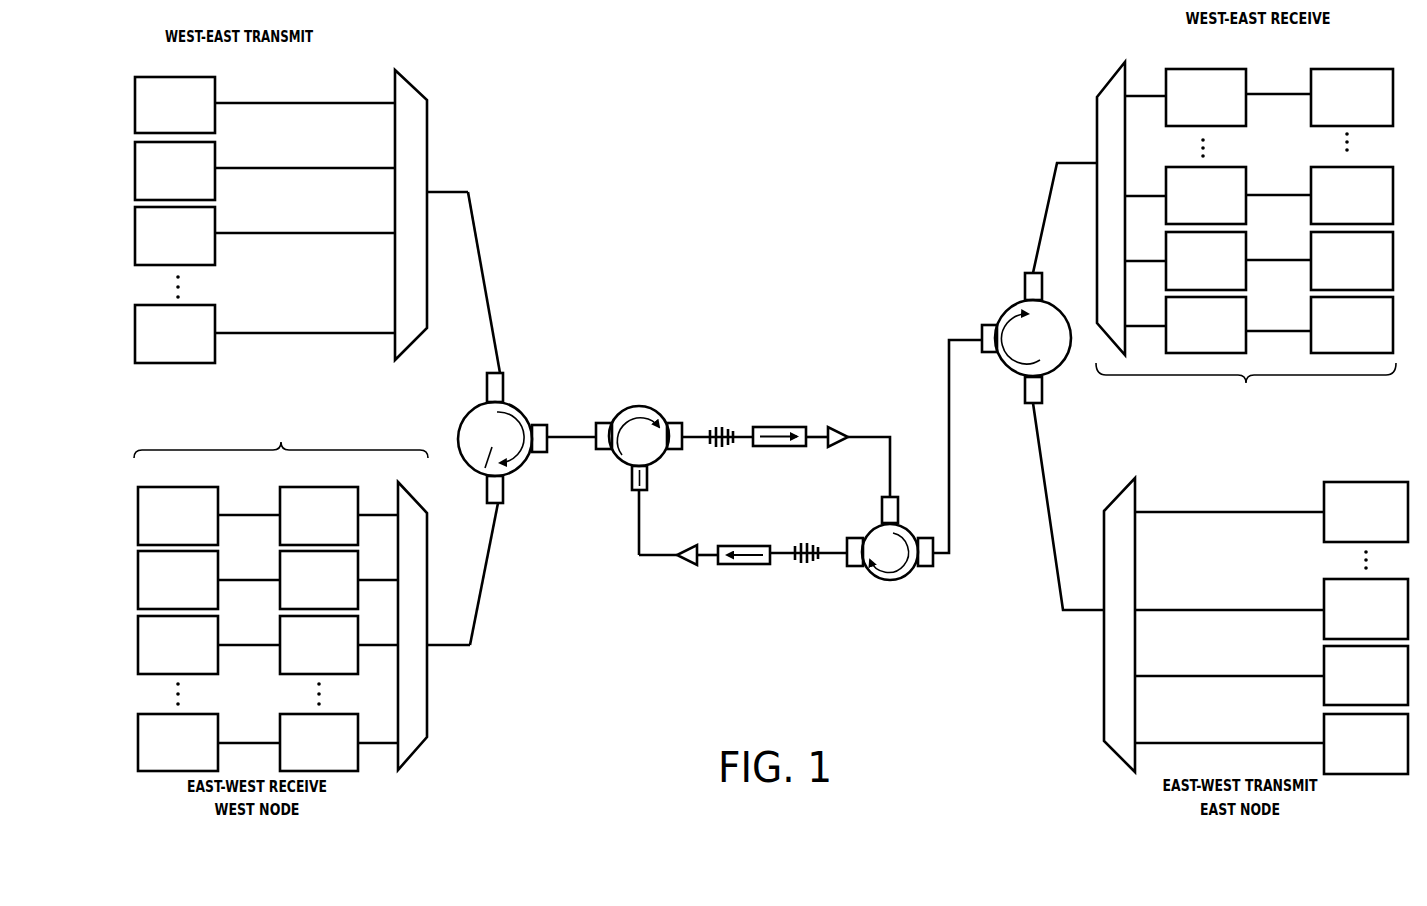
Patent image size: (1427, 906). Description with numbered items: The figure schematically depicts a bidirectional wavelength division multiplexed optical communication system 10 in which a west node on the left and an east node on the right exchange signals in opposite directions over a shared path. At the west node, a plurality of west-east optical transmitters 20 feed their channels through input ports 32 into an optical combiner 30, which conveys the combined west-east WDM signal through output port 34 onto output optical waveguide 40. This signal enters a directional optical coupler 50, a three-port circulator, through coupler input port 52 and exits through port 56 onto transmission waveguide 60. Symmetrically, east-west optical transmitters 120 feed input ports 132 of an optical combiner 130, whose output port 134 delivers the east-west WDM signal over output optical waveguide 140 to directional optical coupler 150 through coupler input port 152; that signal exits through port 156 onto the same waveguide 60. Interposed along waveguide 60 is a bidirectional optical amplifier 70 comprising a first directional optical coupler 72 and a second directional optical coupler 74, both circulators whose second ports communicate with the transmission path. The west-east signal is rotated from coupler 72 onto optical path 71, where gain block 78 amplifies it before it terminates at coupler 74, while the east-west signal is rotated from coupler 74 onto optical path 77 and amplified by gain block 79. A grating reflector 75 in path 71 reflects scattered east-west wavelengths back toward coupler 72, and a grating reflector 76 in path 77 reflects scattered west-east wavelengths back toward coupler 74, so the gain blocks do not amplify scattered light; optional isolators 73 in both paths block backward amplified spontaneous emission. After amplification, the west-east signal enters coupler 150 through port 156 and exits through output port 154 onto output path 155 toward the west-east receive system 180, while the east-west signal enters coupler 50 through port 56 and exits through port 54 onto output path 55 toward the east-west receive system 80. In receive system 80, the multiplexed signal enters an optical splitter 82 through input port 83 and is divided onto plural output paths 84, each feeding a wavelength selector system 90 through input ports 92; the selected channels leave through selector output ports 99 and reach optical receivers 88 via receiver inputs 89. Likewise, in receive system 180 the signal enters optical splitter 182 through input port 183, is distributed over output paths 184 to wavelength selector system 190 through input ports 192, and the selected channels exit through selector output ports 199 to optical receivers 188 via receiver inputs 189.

The bidirectional optical communication system 10 is at (763, 717).
The west-east optical transmitters 20 is at (208, 98).
The optical combiner 30 is at (416, 120).
The input ports 32 is at (395, 103).
The output port 34 is at (435, 190).
The output optical waveguide 40 is at (480, 258).
The directional optical coupler 50 is at (535, 386).
The coupler input port 52 is at (494, 372).
The port 54 is at (488, 505).
The output path 55 is at (484, 588).
The port 56 is at (550, 436).
The transmission waveguide 60 is at (574, 435).
The bidirectional optical amplifier 70 is at (774, 339).
The optical path 71 is at (706, 432).
The first directional optical coupler 72 is at (638, 400).
The isolators 73 is at (772, 427).
The second directional optical coupler 74 is at (916, 582).
The grating reflector 75 is at (716, 450).
The grating reflector 76 is at (808, 550).
The optical path 77 is at (823, 552).
The gain block 78 is at (845, 430).
The gain block 79 is at (688, 565).
The east-west receive system 80 is at (281, 429).
The optical splitter 82 is at (415, 748).
The input port 83 is at (440, 646).
The output paths 84 is at (397, 513).
The optical receivers 88 is at (156, 494).
The receiver inputs 89 is at (220, 514).
The wavelength selector system 90 is at (283, 493).
The input ports 92 is at (365, 513).
The selector output ports 99 is at (275, 580).
The east-west optical transmitters 120 is at (1322, 500).
The optical combiner 130 is at (1119, 516).
The input ports 132 is at (1135, 610).
The output port 134 is at (1095, 612).
The output optical waveguide 140 is at (1046, 478).
The directional optical coupler 150 is at (1000, 383).
The coupler input port 152 is at (1026, 406).
The output port 154 is at (1040, 273).
The output path 155 is at (1047, 203).
The port 156 is at (983, 323).
The west-east receive system 180 is at (1246, 391).
The optical splitter 182 is at (1113, 150).
The input port 183 is at (1097, 165).
The output paths 184 is at (1120, 66).
The optical receivers 188 is at (1326, 70).
The receiver inputs 189 is at (1311, 100).
The wavelength selector system 190 is at (1224, 78).
The input ports 192 is at (1172, 75).
The selector output ports 199 is at (1247, 93).